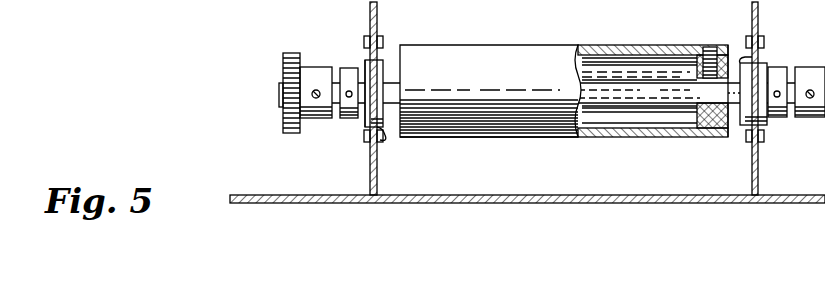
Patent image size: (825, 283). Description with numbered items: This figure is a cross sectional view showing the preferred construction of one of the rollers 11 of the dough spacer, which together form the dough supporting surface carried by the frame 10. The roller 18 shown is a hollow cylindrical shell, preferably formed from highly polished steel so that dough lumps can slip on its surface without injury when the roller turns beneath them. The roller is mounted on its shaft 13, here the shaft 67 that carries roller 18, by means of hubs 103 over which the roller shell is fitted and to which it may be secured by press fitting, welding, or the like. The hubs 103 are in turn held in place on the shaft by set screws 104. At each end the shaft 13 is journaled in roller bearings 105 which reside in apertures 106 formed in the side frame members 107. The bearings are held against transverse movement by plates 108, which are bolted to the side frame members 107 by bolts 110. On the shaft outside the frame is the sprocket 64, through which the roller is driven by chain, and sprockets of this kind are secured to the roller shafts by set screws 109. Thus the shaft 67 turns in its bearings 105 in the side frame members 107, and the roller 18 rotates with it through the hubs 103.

The frame 10 is at (428, 201).
The rollers 11 is at (455, 46).
The shafts 13 is at (618, 102).
The roller 18 is at (521, 56).
The sprocket 64 is at (283, 61).
The shaft 67 is at (647, 90).
The hubs 103 is at (697, 120).
The set screws 104 is at (710, 46).
The roller bearings 105 is at (372, 70).
The apertures 106 is at (760, 65).
The side frame members 107 is at (370, 170).
The plates 108 is at (386, 137).
The set screws 109 is at (316, 98).
The bolts 110 is at (385, 42).